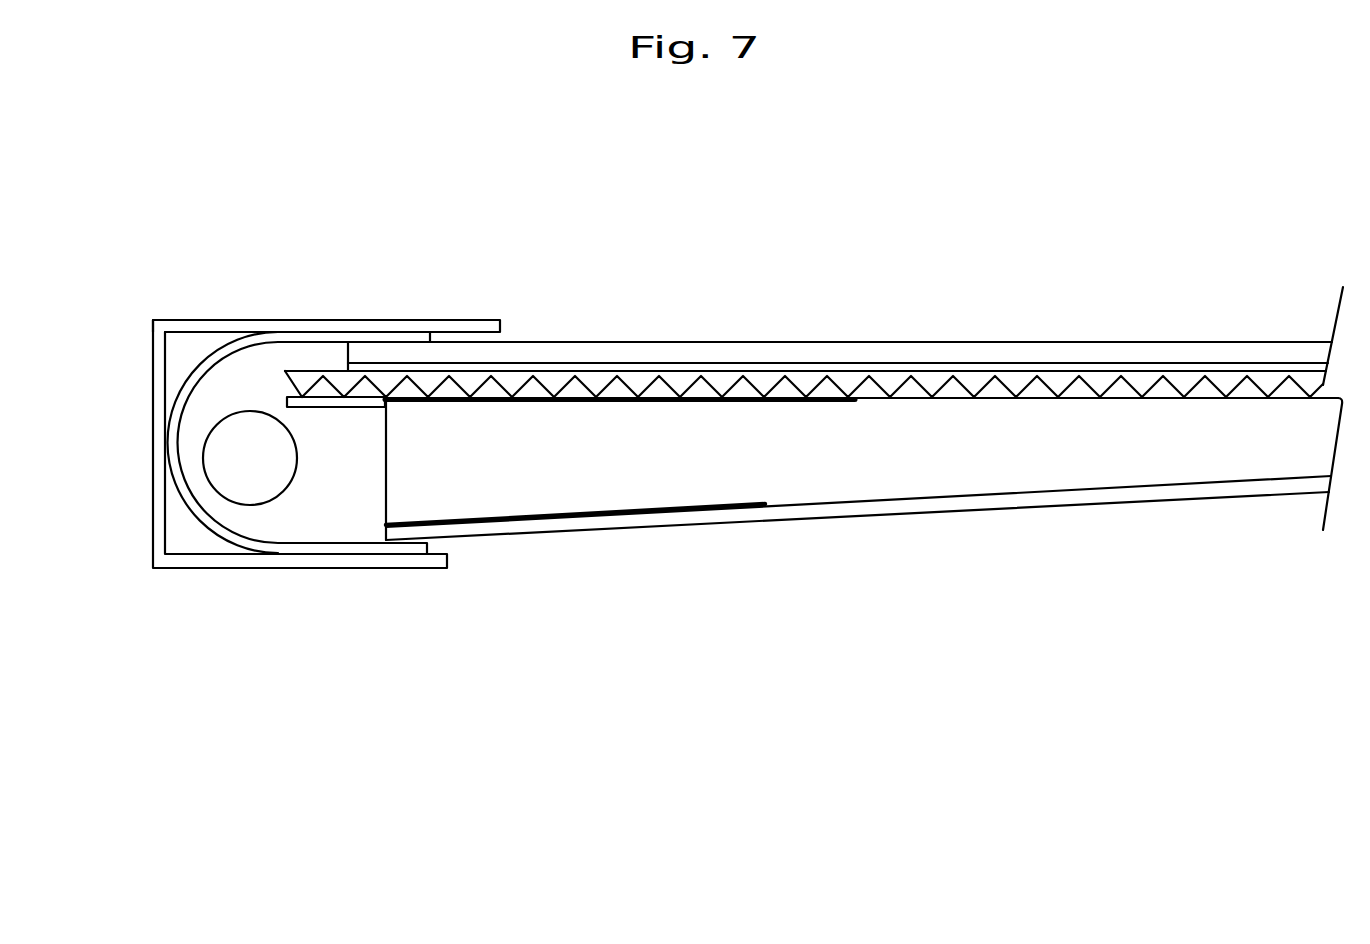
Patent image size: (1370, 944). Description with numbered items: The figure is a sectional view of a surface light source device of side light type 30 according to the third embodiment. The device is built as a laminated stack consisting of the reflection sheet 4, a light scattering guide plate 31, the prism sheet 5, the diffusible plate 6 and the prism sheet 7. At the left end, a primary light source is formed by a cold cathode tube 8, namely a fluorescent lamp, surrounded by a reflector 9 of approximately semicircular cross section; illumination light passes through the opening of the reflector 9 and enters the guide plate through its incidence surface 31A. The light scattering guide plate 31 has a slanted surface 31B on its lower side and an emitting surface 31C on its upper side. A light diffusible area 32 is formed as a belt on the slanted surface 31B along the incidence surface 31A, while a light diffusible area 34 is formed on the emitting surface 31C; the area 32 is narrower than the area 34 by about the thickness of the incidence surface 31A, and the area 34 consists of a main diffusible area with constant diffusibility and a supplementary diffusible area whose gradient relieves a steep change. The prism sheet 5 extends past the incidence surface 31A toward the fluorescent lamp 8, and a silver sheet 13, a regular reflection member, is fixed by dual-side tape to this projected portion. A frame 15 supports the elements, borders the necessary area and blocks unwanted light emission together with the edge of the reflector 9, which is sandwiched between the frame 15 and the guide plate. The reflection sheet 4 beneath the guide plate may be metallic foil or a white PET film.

The surface light source device of side light type 30 is at (548, 693).
The frame 15 is at (408, 318).
The reflector 9 is at (338, 548).
The silver sheet 13 is at (358, 403).
The cold cathode tube 8 is at (253, 483).
The prism sheet 7 is at (1100, 357).
The diffusible plate 6 is at (995, 365).
The light diffusible area 34 is at (620, 395).
The prism sheet 5 is at (845, 378).
The light scattering guide plate 31 is at (920, 457).
The incidence surface 31A is at (388, 458).
The slanted surface 31B is at (1080, 490).
The emitting surface 31C is at (1207, 395).
The light diffusible area 32 is at (612, 517).
The reflection sheet 4 is at (1188, 492).